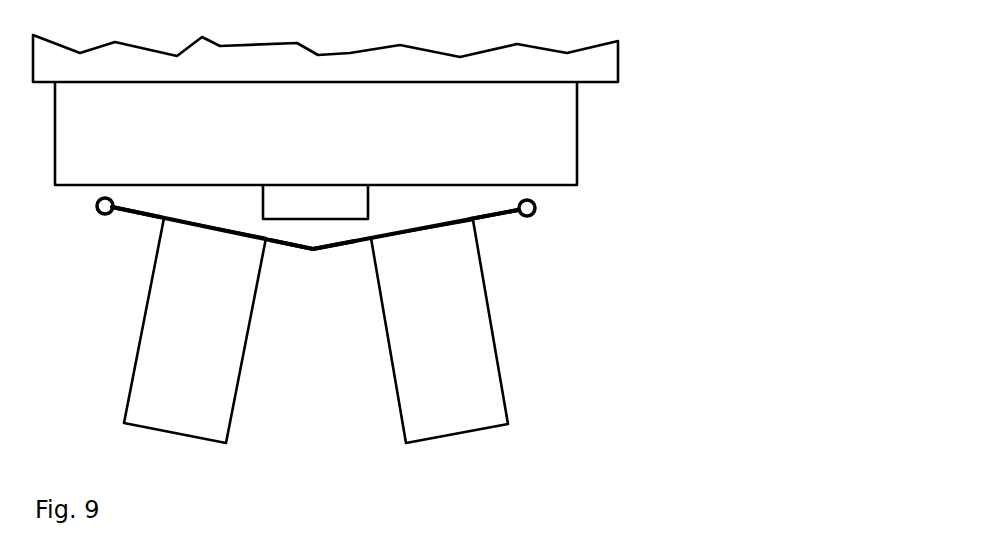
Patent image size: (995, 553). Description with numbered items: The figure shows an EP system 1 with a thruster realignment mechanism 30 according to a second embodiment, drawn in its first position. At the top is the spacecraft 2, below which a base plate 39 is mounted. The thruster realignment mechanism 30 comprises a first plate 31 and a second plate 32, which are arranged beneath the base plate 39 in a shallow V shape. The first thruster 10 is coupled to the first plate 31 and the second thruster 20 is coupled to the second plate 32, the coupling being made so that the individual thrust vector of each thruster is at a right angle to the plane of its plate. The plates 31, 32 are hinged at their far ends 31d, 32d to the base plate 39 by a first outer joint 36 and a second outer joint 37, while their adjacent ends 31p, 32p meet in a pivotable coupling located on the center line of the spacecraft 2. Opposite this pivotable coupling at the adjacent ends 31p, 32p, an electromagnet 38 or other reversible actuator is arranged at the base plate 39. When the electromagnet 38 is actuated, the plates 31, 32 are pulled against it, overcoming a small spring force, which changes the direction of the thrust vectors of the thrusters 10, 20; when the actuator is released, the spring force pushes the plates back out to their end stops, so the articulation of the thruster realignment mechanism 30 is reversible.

The EP system 1 is at (565, 338).
The spacecraft 2 is at (623, 60).
The first thruster 10 is at (173, 435).
The second thruster 20 is at (457, 435).
The thruster realignment mechanism 30 is at (614, 200).
The first plate 31 is at (280, 247).
The far end of first plate 31d is at (130, 217).
The adjacent end of first plate 31p is at (302, 250).
The second plate 32 is at (353, 245).
The far end of second plate 32d is at (495, 218).
The adjacent end of second plate 32p is at (330, 250).
The first outer joint 36 is at (95, 212).
The second outer joint 37 is at (533, 216).
The electromagnet 38 is at (368, 202).
The base plate 39 is at (577, 138).